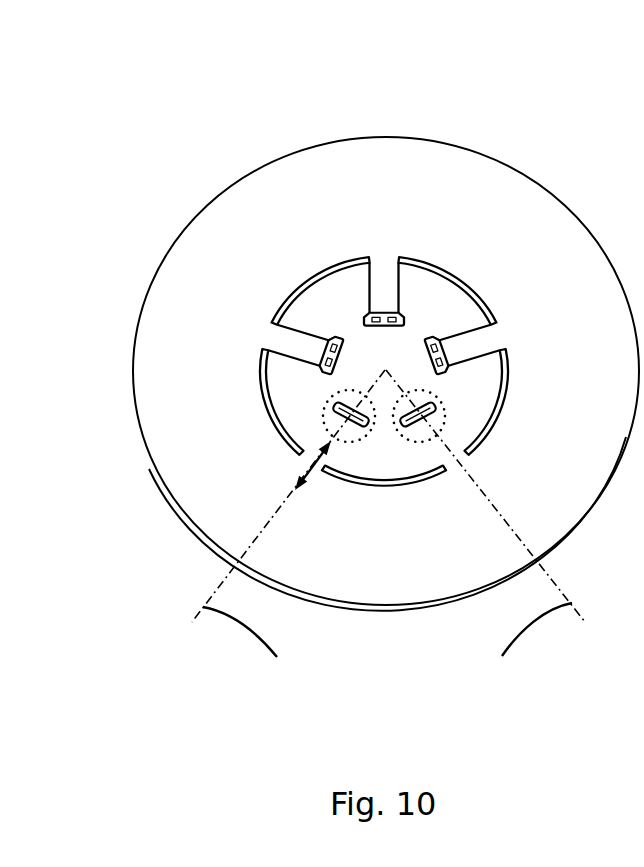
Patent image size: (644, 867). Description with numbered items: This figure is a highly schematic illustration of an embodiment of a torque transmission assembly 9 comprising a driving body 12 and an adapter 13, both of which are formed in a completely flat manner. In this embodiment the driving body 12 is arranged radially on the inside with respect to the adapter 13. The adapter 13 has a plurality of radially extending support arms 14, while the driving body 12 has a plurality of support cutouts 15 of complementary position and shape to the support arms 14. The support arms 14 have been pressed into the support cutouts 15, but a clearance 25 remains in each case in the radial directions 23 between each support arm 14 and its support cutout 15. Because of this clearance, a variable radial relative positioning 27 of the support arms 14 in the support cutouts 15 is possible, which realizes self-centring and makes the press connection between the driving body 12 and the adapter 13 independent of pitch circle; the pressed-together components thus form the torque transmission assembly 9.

The torque transmission assembly 9 is at (368, 378).
The driving body 12 is at (328, 309).
The adapter 13 is at (467, 177).
The support arm 14 is at (460, 428).
The support cutout 15 is at (386, 300).
The radial direction 23 is at (387, 653).
The clearance 25 is at (410, 440).
The variable radial relative positioning 27 is at (312, 464).